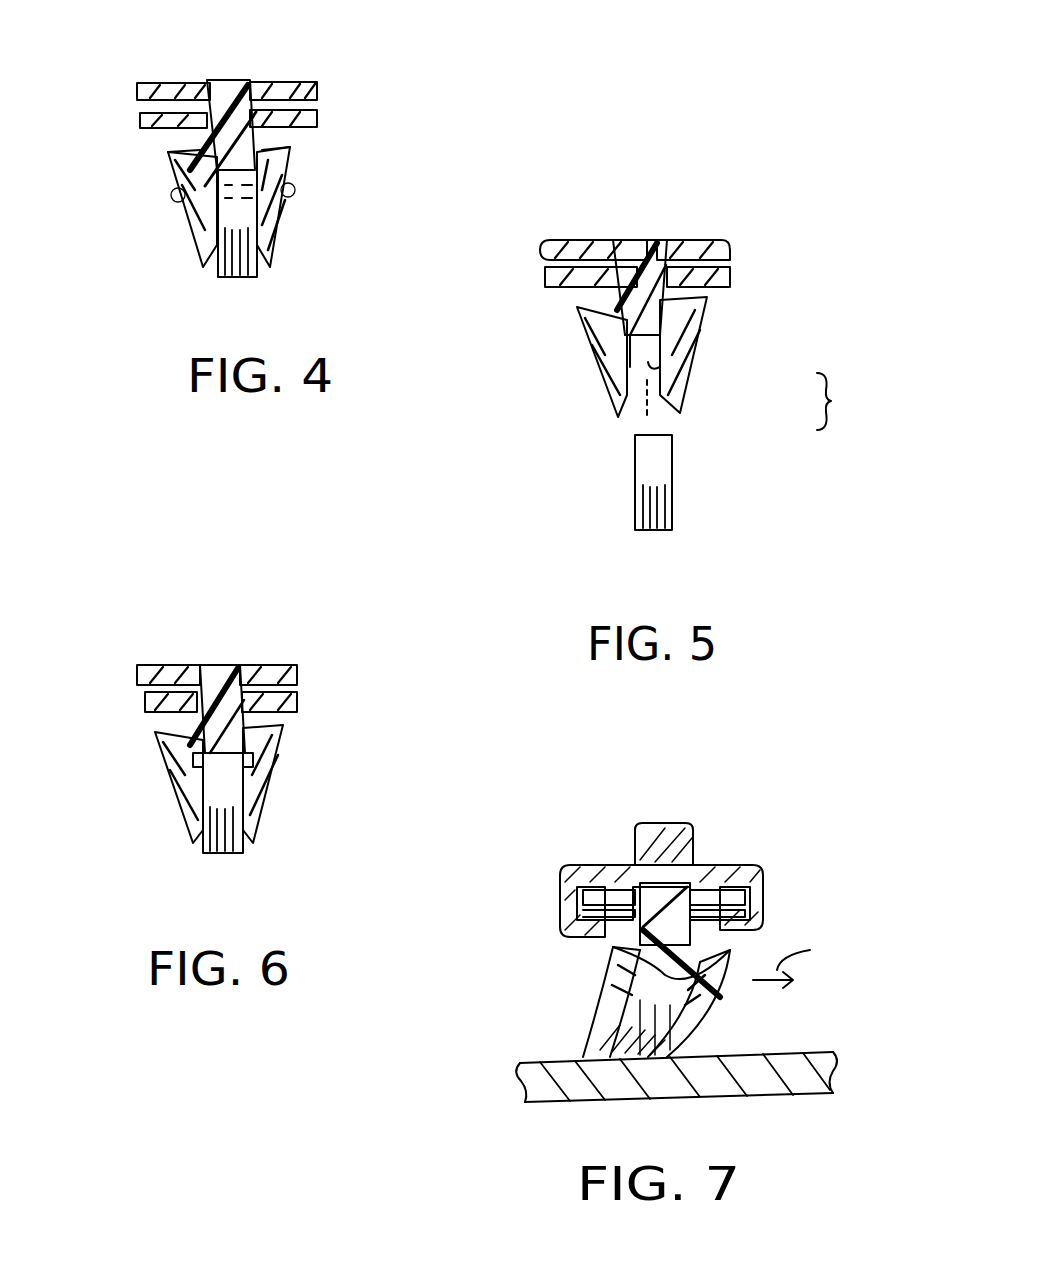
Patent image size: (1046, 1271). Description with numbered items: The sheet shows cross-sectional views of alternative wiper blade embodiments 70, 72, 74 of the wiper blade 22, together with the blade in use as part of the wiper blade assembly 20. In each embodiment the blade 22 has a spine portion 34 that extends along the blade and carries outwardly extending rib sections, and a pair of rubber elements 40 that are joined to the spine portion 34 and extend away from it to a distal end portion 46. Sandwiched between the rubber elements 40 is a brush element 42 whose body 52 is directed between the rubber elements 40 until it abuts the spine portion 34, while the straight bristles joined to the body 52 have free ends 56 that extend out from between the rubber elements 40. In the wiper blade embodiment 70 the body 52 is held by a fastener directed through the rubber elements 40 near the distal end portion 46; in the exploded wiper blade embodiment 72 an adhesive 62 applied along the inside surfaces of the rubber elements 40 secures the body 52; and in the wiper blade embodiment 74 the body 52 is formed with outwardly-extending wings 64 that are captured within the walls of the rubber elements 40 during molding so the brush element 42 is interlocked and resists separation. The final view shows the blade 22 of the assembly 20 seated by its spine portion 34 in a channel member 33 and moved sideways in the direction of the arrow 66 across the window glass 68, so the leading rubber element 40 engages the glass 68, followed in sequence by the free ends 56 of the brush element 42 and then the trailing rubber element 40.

In FIG. 7, the fastener assembly 20 is at (633, 830).
In FIG. 7, the wiper blade 22 is at (660, 887).
In FIG. 7, the channel member 33 is at (760, 910).
In FIG. 4, the spine portion 34 is at (220, 97).
In FIG. 5, the spine portion 34 is at (630, 250).
In FIG. 6, the spine portion 34 is at (213, 680).
In FIG. 7, the spine portion 34 is at (697, 870).
In FIG. 4, the rubber element 40 is at (173, 167).
In FIG. 5, the rubber element 40 is at (597, 347).
In FIG. 6, the rubber element 40 is at (167, 747).
In FIG. 7, the rubber element 40 is at (613, 997).
In FIG. 4, the brush element 42 is at (240, 217).
In FIG. 5, the brush element 42 is at (650, 532).
In FIG. 6, the brush element 42 is at (223, 853).
In FIG. 7, the brush element 42 is at (667, 1003).
In FIG. 4, the distal end portion 46 is at (167, 163).
In FIG. 4, the body 52 is at (233, 192).
In FIG. 5, the body 52 is at (635, 462).
In FIG. 6, the body 52 is at (230, 790).
In FIG. 7, the free ends 56 is at (637, 1060).
In FIG. 5, the adhesive 62 is at (663, 367).
In FIG. 6, the wings 64 is at (257, 767).
In FIG. 7, the arrow 66 is at (806, 967).
In FIG. 7, the window glass 68 is at (817, 1060).
In FIG. 4, the wiper blade embodiment 70 is at (280, 77).
In FIG. 5, the wiper blade embodiment 72 is at (683, 237).
In FIG. 6, the wiper blade embodiment 74 is at (267, 663).